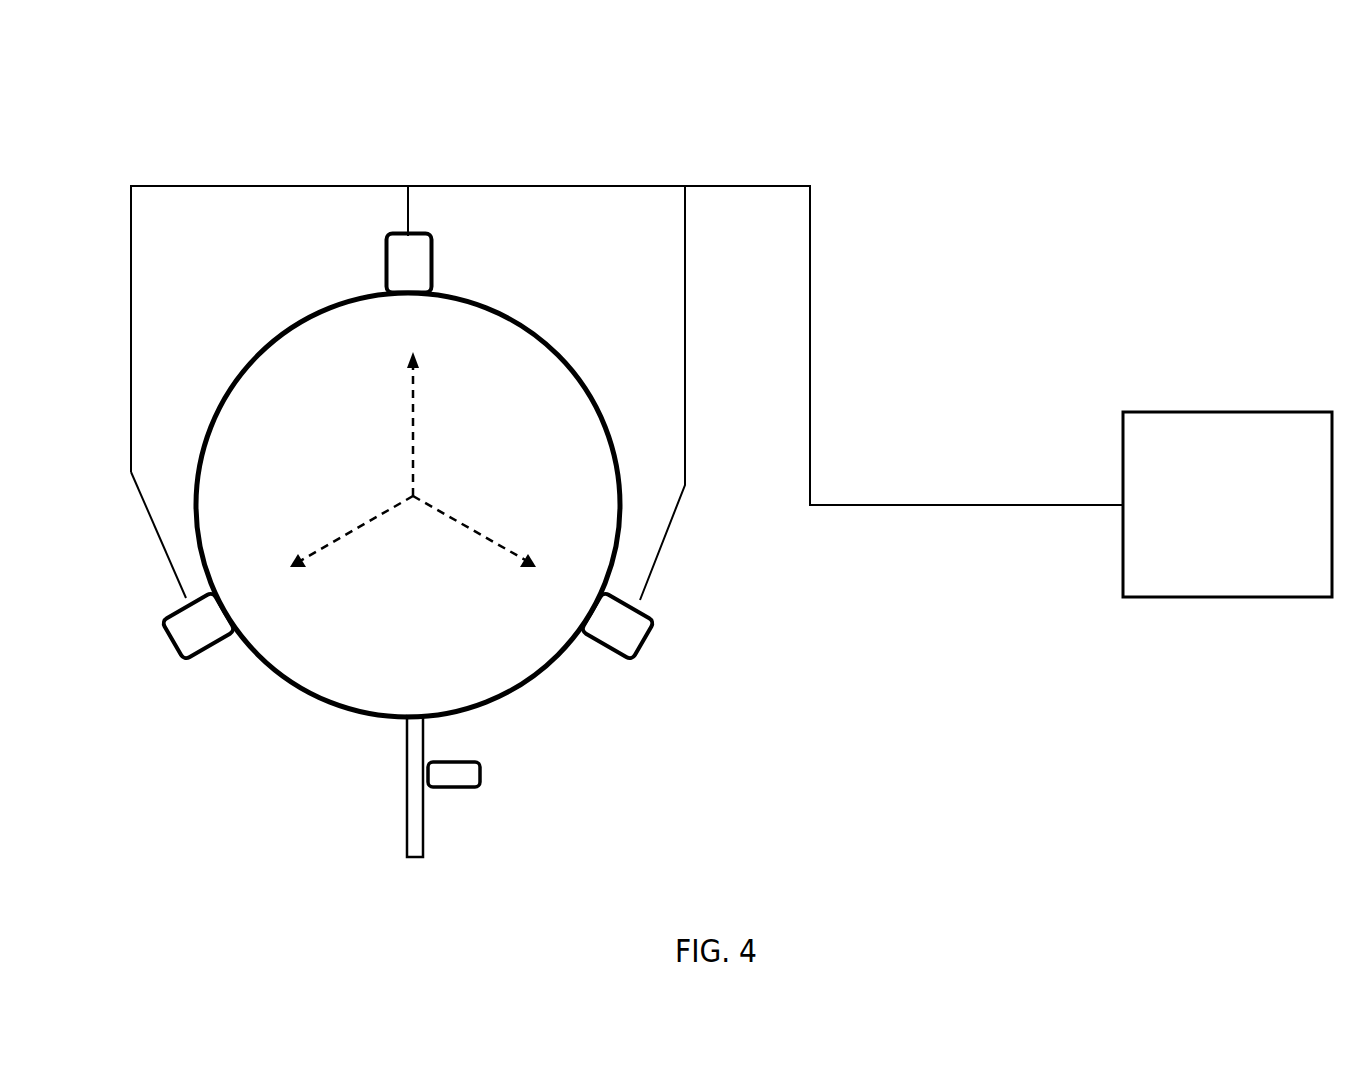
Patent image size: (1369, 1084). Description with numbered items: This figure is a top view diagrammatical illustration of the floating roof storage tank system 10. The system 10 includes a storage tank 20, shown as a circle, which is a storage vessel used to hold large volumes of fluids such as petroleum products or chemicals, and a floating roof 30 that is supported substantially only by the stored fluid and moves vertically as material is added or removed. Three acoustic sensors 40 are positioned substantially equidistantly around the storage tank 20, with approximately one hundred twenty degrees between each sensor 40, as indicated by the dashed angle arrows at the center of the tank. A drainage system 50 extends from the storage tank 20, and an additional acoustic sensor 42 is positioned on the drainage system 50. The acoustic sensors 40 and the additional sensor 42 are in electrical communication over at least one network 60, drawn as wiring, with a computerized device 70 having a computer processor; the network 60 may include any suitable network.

The floating roof storage tank system 10 is at (168, 138).
The storage tank 20 is at (538, 680).
The floating roof 30 is at (275, 407).
The acoustic sensors 40 is at (433, 266).
The additional sensor 42 is at (454, 778).
The drainage system 50 is at (400, 839).
The network 60 is at (813, 180).
The computerized device 70 is at (1200, 433).